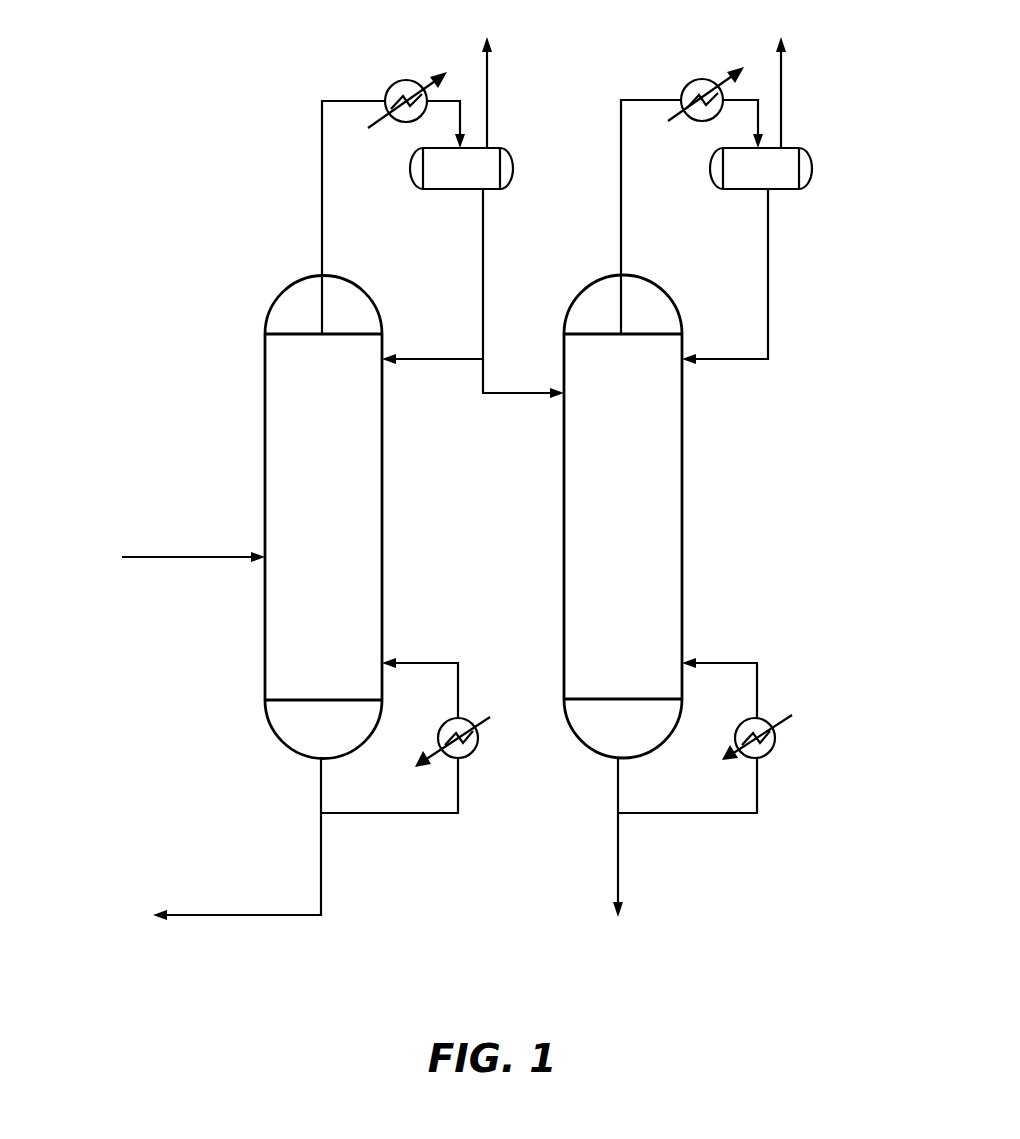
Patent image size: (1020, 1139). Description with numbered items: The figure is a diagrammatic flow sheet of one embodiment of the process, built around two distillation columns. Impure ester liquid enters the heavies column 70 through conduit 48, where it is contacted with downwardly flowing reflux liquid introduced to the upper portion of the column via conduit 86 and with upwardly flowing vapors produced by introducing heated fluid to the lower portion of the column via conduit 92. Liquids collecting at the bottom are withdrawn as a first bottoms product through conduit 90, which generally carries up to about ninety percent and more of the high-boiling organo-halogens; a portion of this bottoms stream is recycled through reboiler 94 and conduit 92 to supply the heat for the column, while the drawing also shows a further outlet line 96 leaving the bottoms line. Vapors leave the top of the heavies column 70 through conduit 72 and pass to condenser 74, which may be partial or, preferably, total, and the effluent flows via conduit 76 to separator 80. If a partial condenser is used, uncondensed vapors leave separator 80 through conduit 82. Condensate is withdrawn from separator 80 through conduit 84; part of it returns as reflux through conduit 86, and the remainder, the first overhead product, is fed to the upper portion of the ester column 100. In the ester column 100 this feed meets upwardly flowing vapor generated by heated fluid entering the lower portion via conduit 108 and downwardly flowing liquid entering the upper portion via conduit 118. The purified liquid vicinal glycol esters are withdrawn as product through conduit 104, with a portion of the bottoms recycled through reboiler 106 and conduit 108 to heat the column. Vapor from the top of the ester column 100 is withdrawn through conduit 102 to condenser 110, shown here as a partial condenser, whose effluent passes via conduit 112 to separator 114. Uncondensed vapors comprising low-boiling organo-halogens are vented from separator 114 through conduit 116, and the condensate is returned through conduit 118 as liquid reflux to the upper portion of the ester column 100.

The conduit 48 is at (213, 560).
The heavies column 70 is at (253, 423).
The conduit 72 is at (322, 153).
The condenser 74 is at (393, 83).
The conduit 76 is at (458, 121).
The separator 80 is at (458, 192).
The conduit 82 is at (490, 88).
The conduit 84 is at (487, 242).
The conduit 86 is at (418, 365).
The conduit 90 is at (320, 785).
The conduit 92 is at (460, 678).
The reboiler 94 is at (470, 752).
The heavies product line 96 is at (237, 915).
The ester column 100 is at (694, 467).
The conduit 102 is at (620, 172).
The conduit 104 is at (618, 862).
The reboiler 106 is at (737, 740).
The conduit 108 is at (712, 662).
The condenser 110 is at (688, 82).
The conduit 112 is at (755, 118).
The separator 114 is at (757, 192).
The conduit 116 is at (783, 85).
The conduit 118 is at (770, 290).